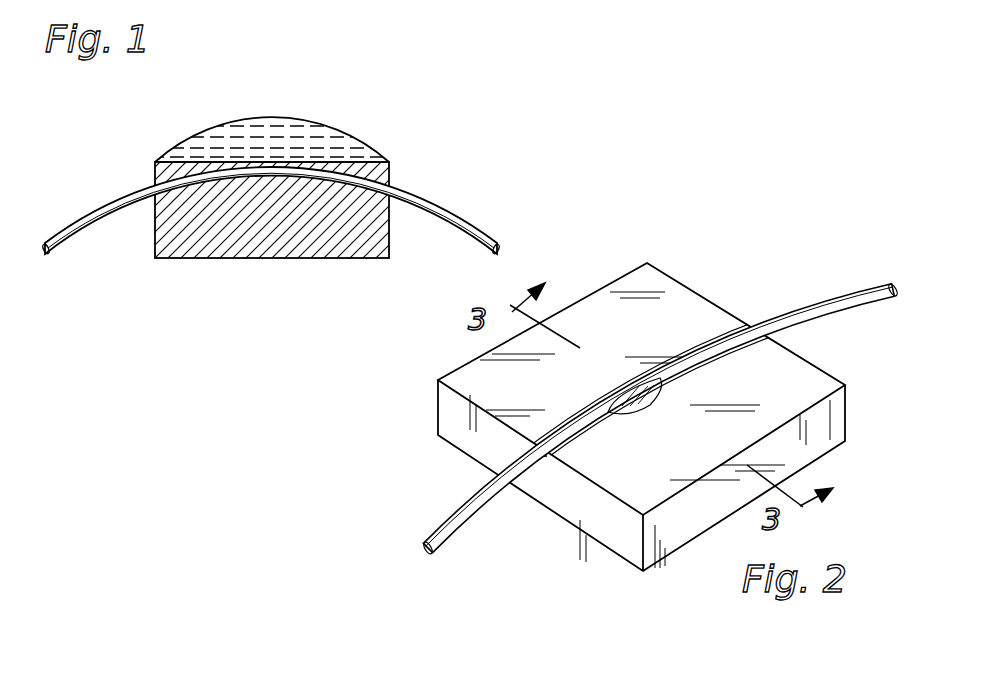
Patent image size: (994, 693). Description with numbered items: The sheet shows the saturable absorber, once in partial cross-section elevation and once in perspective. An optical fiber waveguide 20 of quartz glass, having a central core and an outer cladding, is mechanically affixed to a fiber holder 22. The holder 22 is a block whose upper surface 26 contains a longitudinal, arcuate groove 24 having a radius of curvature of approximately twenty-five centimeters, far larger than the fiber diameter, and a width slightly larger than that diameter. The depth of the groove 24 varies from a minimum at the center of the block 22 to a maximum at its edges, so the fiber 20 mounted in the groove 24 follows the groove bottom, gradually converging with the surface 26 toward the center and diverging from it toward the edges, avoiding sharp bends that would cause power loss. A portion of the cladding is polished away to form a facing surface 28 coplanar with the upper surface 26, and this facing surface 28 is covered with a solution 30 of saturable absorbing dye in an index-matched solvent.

In FIG. 1, the optical fiber waveguide 20 is at (68, 227).
In FIG. 2, the optical fiber waveguide 20 is at (844, 296).
In FIG. 1, the fiber holder 22 is at (252, 260).
In FIG. 2, the fiber holder 22 is at (683, 530).
In FIG. 2, the groove 24 is at (520, 464).
In FIG. 1, the upper surface 26 is at (355, 160).
In FIG. 2, the upper surface 26 is at (600, 299).
In FIG. 2, the facing surface 28 is at (642, 377).
In FIG. 1, the solution 30 is at (273, 130).